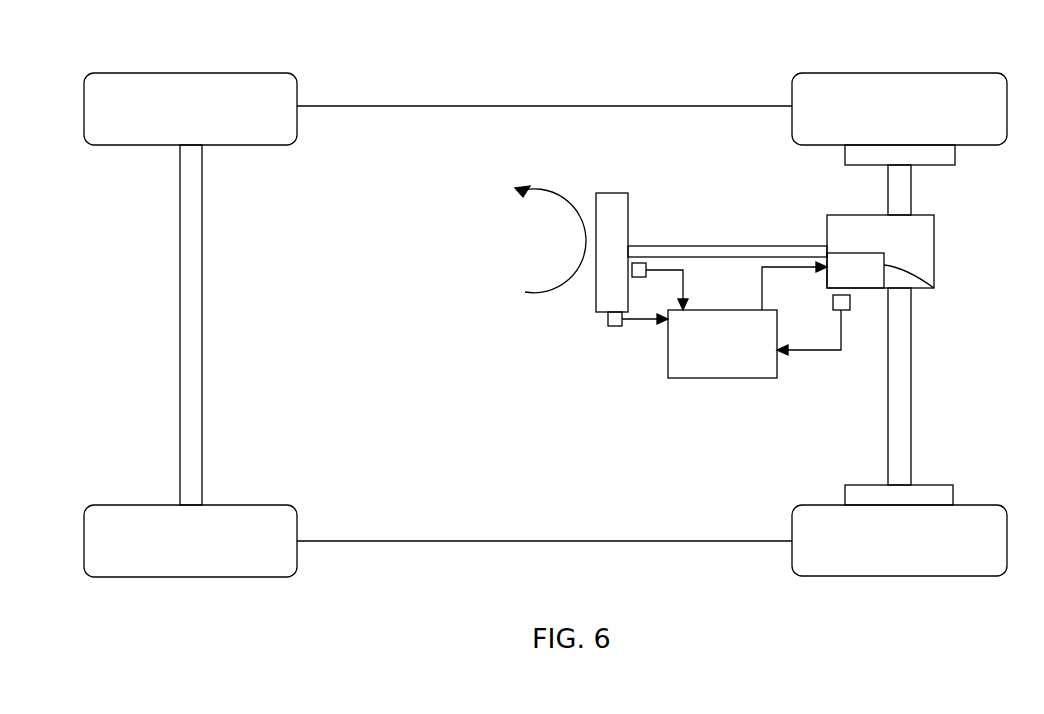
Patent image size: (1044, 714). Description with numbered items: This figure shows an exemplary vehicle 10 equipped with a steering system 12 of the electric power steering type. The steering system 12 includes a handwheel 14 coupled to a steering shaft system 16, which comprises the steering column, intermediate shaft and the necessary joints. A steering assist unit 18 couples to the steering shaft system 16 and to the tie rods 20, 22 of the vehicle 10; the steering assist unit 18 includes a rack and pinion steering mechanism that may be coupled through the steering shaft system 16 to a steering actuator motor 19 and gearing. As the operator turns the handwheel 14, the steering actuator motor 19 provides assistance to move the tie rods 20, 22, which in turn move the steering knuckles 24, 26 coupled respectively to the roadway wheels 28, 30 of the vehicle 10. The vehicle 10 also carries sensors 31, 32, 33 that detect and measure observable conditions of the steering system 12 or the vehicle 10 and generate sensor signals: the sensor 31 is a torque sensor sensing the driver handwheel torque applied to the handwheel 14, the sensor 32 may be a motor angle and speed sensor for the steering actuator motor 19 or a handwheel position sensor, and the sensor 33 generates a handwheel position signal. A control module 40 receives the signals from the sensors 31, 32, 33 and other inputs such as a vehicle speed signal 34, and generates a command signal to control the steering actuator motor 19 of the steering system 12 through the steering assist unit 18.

The vehicle 10 is at (562, 80).
The steering system 12 is at (688, 203).
The handwheel 14 is at (615, 192).
The steering shaft system 16 is at (729, 246).
The steering assist unit 18 is at (934, 258).
The steering actuator motor 19 is at (934, 288).
The tie rod 20 is at (911, 200).
The tie rod 22 is at (911, 398).
The steering knuckle 24 is at (862, 157).
The steering knuckle 26 is at (935, 490).
The roadway wheel 28 is at (795, 83).
The roadway wheel 30 is at (978, 512).
The sensor 31 is at (640, 262).
The sensor 32 is at (832, 300).
The sensor 33 is at (618, 328).
The vehicle speed signal 34 is at (720, 390).
The control module 40 is at (708, 308).